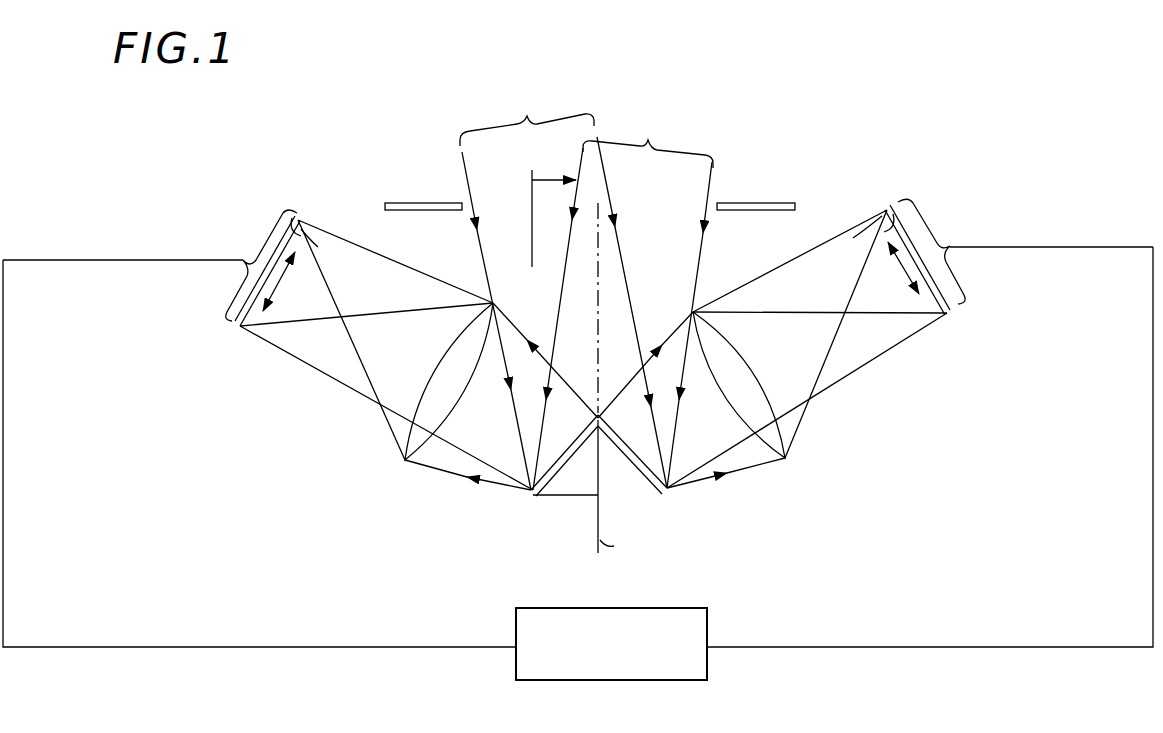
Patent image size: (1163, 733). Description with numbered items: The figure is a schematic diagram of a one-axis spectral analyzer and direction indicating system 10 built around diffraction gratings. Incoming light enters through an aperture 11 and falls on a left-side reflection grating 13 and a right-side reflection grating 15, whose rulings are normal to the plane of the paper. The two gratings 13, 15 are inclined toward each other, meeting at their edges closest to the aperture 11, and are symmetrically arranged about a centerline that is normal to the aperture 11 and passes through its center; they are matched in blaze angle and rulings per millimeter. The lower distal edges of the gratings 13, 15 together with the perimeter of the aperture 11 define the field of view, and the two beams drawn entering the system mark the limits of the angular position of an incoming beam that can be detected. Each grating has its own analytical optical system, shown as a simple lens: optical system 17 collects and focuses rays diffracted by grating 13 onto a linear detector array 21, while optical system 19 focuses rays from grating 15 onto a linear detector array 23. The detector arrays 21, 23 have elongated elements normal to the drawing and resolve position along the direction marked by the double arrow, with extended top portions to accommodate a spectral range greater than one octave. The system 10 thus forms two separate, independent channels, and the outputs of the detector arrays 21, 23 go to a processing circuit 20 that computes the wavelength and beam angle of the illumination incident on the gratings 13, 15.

The one-axis spectral analyzer system 10 is at (833, 127).
The aperture 11 is at (691, 188).
The left-side reflection grating 13 is at (531, 493).
The right-side reflection grating 15 is at (664, 494).
The analytical optical system 17 is at (413, 455).
The analytical optical system 19 is at (762, 441).
The processing circuit 20 is at (680, 681).
The linear detector array 21 is at (238, 328).
The linear detector array 23 is at (950, 316).